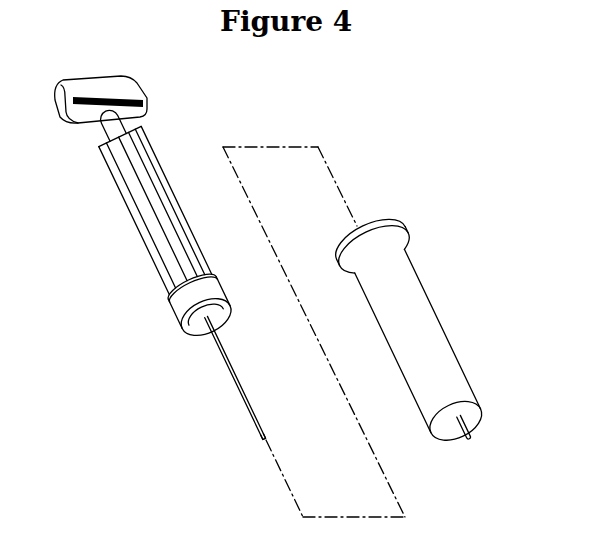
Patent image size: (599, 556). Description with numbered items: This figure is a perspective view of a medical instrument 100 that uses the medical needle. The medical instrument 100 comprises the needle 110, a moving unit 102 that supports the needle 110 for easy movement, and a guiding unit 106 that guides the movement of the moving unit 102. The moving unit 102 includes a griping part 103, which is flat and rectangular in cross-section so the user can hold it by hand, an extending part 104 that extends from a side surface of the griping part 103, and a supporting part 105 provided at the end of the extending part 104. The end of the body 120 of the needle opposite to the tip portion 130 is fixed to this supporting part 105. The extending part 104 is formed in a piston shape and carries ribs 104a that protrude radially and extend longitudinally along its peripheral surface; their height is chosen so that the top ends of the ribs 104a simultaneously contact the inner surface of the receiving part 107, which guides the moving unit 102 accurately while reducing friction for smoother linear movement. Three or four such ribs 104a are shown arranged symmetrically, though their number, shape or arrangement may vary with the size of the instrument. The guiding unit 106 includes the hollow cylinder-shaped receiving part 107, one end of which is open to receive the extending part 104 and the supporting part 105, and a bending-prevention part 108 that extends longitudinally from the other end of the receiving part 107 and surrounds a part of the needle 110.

The medical instrument 100 is at (419, 97).
The moving unit 102 is at (100, 208).
The griping part 103 is at (123, 86).
The extending part 104 is at (103, 128).
The ribs 104a is at (150, 178).
The supporting part 105 is at (176, 305).
The needle 110 is at (214, 398).
The body 120 is at (233, 362).
The tip portion 130 is at (266, 438).
The guiding unit 106 is at (428, 258).
The receiving part 107 is at (417, 308).
The bending-prevention part 108 is at (470, 437).